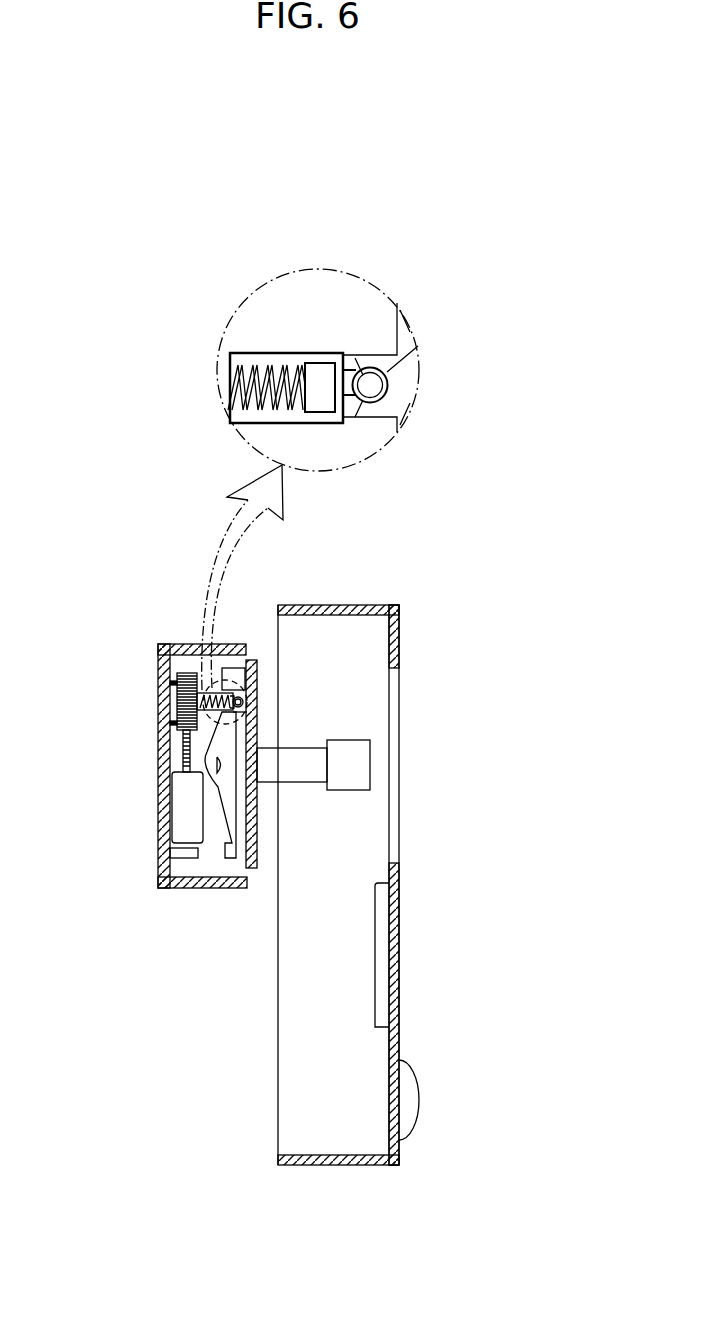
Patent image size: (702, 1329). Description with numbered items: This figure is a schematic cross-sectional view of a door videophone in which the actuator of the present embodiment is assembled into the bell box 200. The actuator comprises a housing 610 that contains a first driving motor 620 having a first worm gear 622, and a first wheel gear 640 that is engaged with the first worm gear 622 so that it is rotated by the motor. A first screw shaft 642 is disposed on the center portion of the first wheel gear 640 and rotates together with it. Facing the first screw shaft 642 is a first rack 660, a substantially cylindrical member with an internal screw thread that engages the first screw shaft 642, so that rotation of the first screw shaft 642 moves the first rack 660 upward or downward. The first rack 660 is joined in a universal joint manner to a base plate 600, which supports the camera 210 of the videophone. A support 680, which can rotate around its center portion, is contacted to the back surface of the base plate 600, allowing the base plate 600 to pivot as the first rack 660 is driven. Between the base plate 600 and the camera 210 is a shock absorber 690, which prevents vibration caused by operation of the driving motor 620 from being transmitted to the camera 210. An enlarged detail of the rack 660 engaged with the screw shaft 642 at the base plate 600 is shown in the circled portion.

The bell box 200 is at (395, 635).
The camera 210 is at (353, 770).
The base plate 600 is at (407, 383).
The housing 610 is at (183, 650).
The first driving motor 620 is at (180, 803).
The first worm gear 622 is at (183, 738).
The first wheel gear 640 is at (175, 683).
The first screw shaft 642 is at (227, 388).
The first rack 660 is at (297, 363).
The support 680 is at (223, 857).
The shock absorber 690 is at (288, 760).